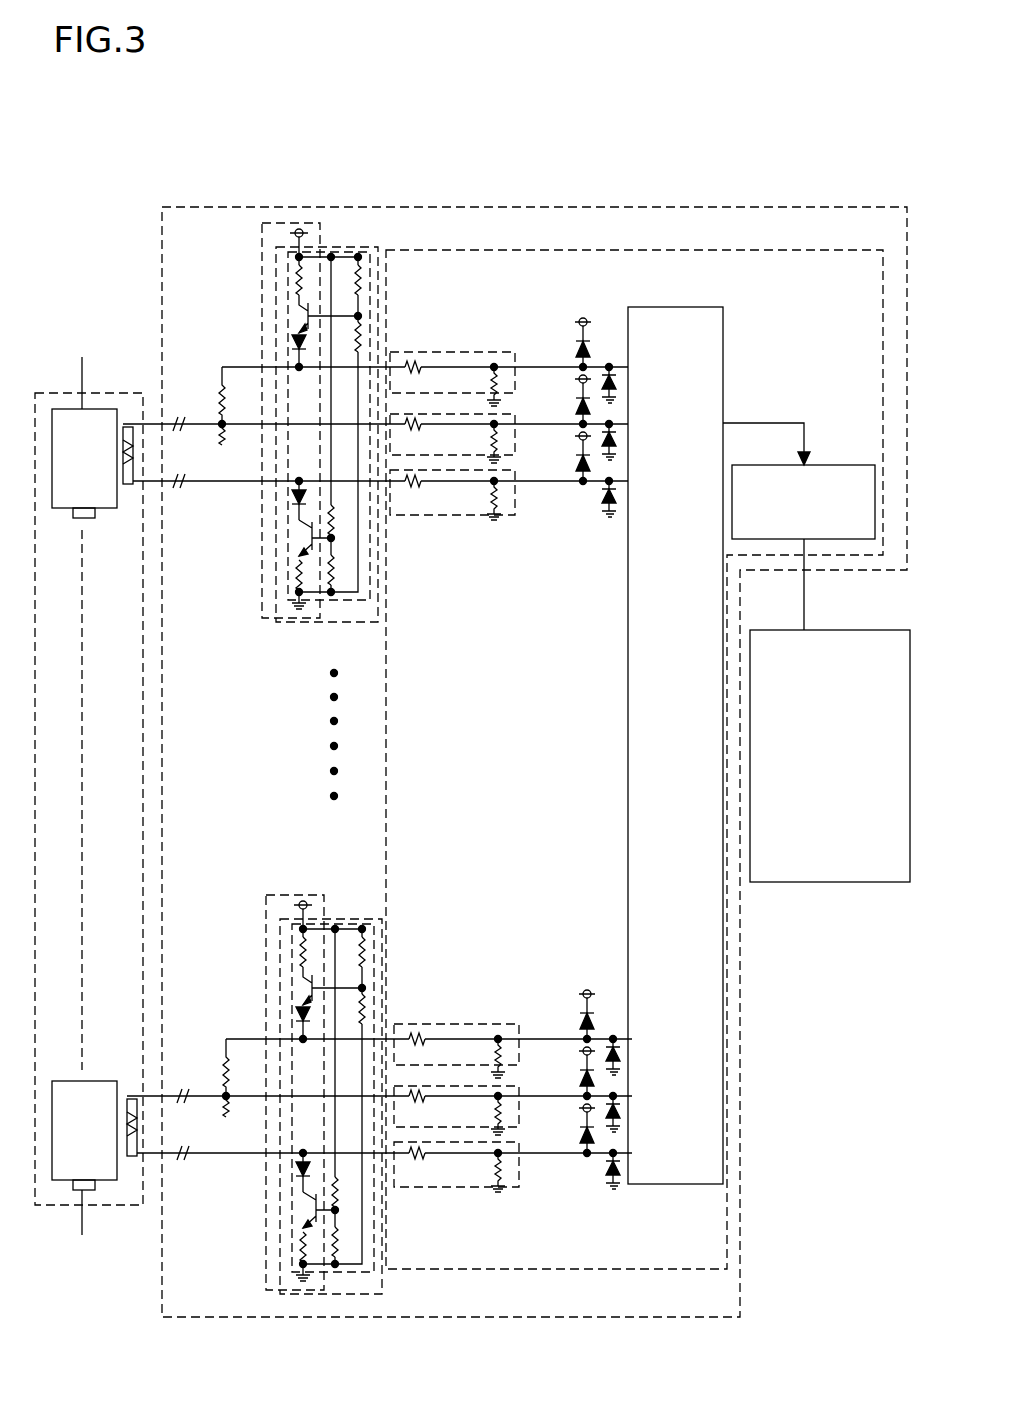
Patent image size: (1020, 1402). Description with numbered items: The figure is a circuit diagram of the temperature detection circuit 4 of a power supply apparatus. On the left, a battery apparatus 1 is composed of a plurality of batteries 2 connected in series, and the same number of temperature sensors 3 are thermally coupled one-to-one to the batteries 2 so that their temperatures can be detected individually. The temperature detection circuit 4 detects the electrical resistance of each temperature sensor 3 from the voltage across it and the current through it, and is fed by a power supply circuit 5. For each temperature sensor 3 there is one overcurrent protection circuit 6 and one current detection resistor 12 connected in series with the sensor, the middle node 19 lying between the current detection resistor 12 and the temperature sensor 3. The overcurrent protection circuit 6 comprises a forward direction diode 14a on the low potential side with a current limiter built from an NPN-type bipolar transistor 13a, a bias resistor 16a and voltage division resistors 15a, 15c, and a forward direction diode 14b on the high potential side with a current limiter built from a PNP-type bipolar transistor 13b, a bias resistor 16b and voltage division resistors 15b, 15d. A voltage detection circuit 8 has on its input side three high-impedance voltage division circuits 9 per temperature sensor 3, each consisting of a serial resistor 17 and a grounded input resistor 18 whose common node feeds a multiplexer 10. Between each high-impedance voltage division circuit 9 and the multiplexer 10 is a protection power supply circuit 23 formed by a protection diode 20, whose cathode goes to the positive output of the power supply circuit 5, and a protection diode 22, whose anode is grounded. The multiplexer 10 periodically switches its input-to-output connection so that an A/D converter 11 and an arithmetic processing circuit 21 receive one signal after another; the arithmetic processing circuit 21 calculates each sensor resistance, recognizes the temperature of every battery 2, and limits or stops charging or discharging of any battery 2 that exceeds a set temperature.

The battery apparatus 1 is at (90, 262).
The battery 2 is at (118, 407).
The temperature sensor 3 is at (138, 478).
The temperature detection circuit 4 is at (488, 207).
The power supply circuit 5 is at (262, 251).
The overcurrent protection circuit 6 is at (356, 248).
The voltage detection circuit 8 is at (596, 250).
The high-impedance voltage division circuit 9 is at (484, 352).
The multiplexer 10 is at (628, 832).
The A/D converter 11 is at (816, 465).
The current detection resistor 12 is at (222, 385).
The NPN-type bipolar transistor 13a is at (316, 546).
The PNP-type bipolar transistor 13b is at (304, 332).
The diode 14a is at (297, 500).
The diode 14b is at (308, 355).
The voltage division resistor 15a is at (340, 565).
The voltage division resistor 15b is at (368, 280).
The voltage division resistor 15c is at (340, 515).
The voltage division resistor 15d is at (368, 335).
The bias resistor 16a is at (297, 566).
The bias resistor 16b is at (296, 278).
The serial resistor 17 is at (424, 352).
The input resistor 18 is at (490, 387).
The middle node 19 is at (214, 783).
The protection diode 20 is at (612, 358).
The arithmetic processing circuit 21 is at (850, 882).
The protection diode 22 is at (620, 1055).
The protection power supply circuit 23 is at (592, 1000).